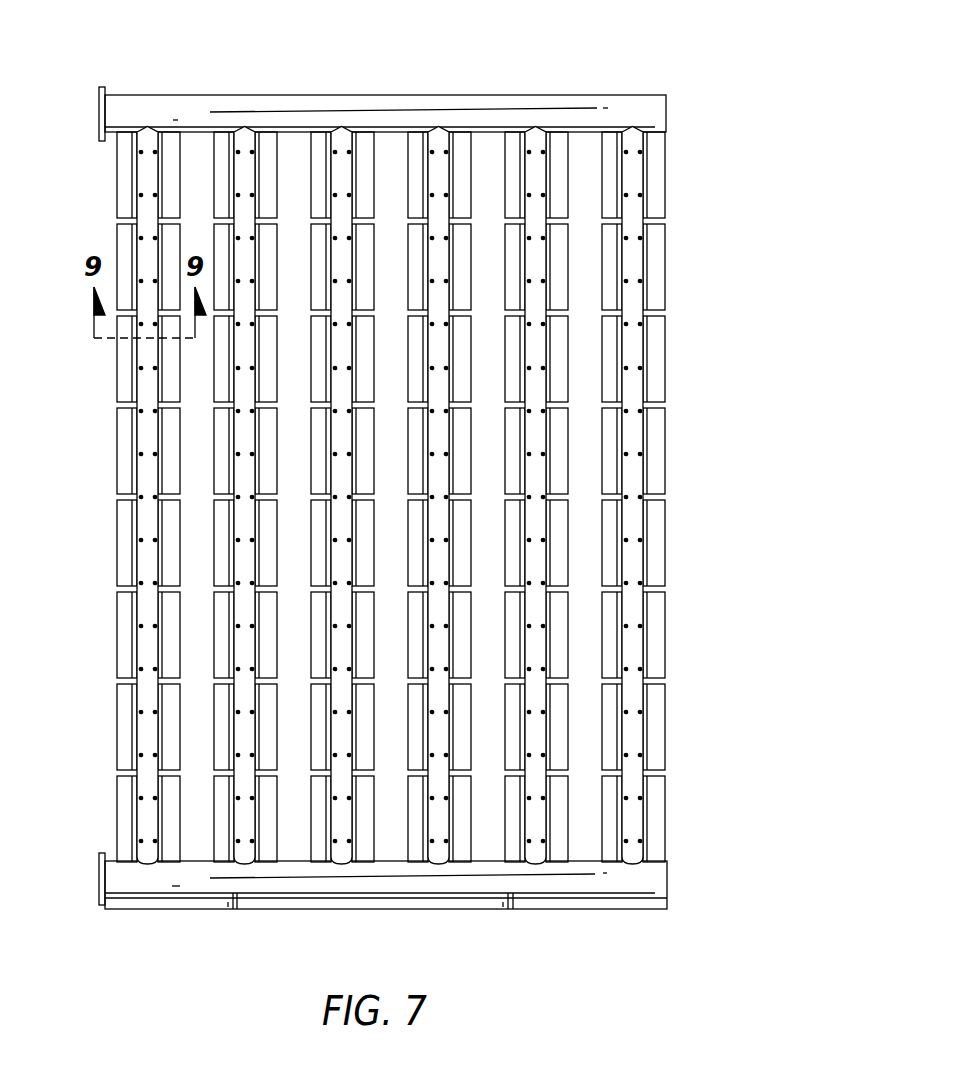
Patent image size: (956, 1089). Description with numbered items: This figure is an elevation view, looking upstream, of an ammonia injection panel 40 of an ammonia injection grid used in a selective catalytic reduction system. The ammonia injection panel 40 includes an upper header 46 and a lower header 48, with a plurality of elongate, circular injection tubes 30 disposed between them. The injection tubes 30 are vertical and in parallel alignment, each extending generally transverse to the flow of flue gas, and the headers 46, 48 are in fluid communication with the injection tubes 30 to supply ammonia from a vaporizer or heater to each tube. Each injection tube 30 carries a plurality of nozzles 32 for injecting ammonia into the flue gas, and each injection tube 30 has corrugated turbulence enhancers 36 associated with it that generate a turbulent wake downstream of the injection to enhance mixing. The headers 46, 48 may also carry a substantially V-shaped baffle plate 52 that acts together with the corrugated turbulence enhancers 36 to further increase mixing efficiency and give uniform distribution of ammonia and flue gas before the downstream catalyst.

The injection tube 30 is at (145, 468).
The nozzle 32 is at (140, 711).
The corrugated turbulence enhancer 36 is at (318, 165).
The ammonia injection panel 40 is at (412, 503).
The upper header 46 is at (437, 108).
The lower header 48 is at (458, 885).
The baffle plate 52 is at (177, 903).